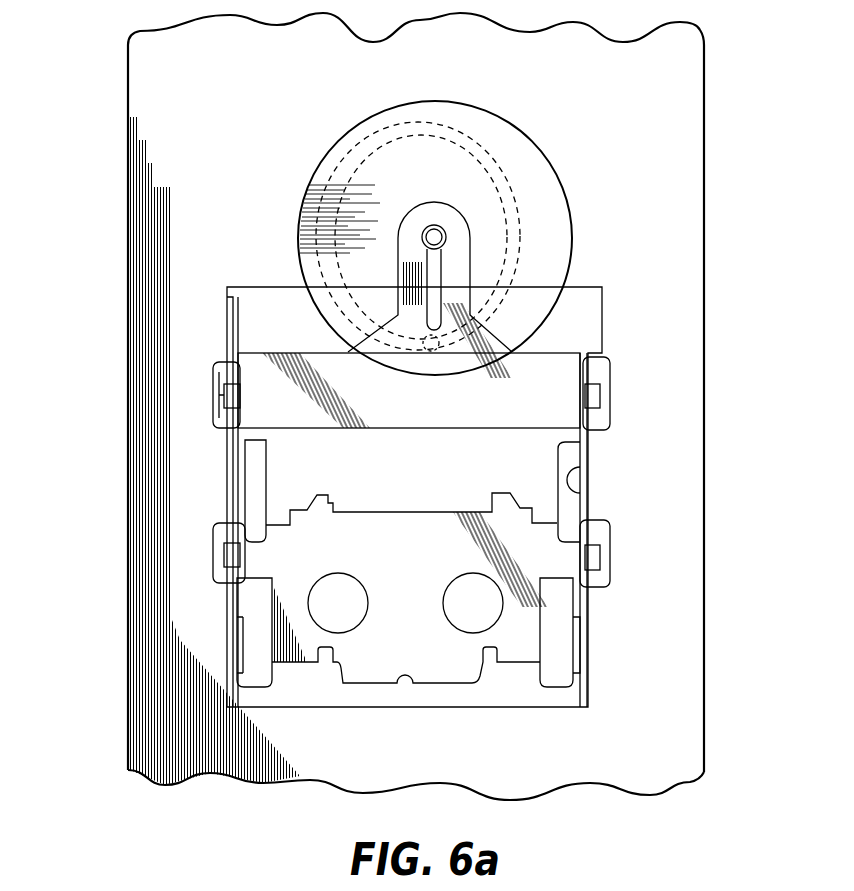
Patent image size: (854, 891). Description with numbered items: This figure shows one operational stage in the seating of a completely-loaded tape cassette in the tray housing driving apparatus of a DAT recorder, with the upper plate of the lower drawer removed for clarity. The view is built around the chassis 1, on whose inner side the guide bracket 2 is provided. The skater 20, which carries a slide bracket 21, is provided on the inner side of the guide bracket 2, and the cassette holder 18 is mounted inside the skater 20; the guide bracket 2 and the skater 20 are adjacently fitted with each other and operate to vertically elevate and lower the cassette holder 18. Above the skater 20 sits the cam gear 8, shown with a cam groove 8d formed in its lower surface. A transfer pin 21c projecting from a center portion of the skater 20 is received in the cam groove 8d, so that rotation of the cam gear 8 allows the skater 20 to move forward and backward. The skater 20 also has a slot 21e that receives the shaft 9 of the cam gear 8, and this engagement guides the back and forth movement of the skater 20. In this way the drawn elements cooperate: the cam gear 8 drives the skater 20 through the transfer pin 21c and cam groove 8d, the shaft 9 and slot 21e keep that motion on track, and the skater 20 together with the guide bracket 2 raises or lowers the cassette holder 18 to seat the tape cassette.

The chassis 1 is at (695, 418).
The guide bracket 2 is at (593, 508).
The cam gear 8 is at (340, 143).
The cam groove 8d is at (391, 133).
The shaft 9 is at (443, 228).
The cassette holder 18 is at (530, 598).
The skater 20 is at (548, 372).
The slide bracket 21 is at (590, 462).
The transfer pin 21c is at (488, 330).
The slot 21e is at (427, 307).